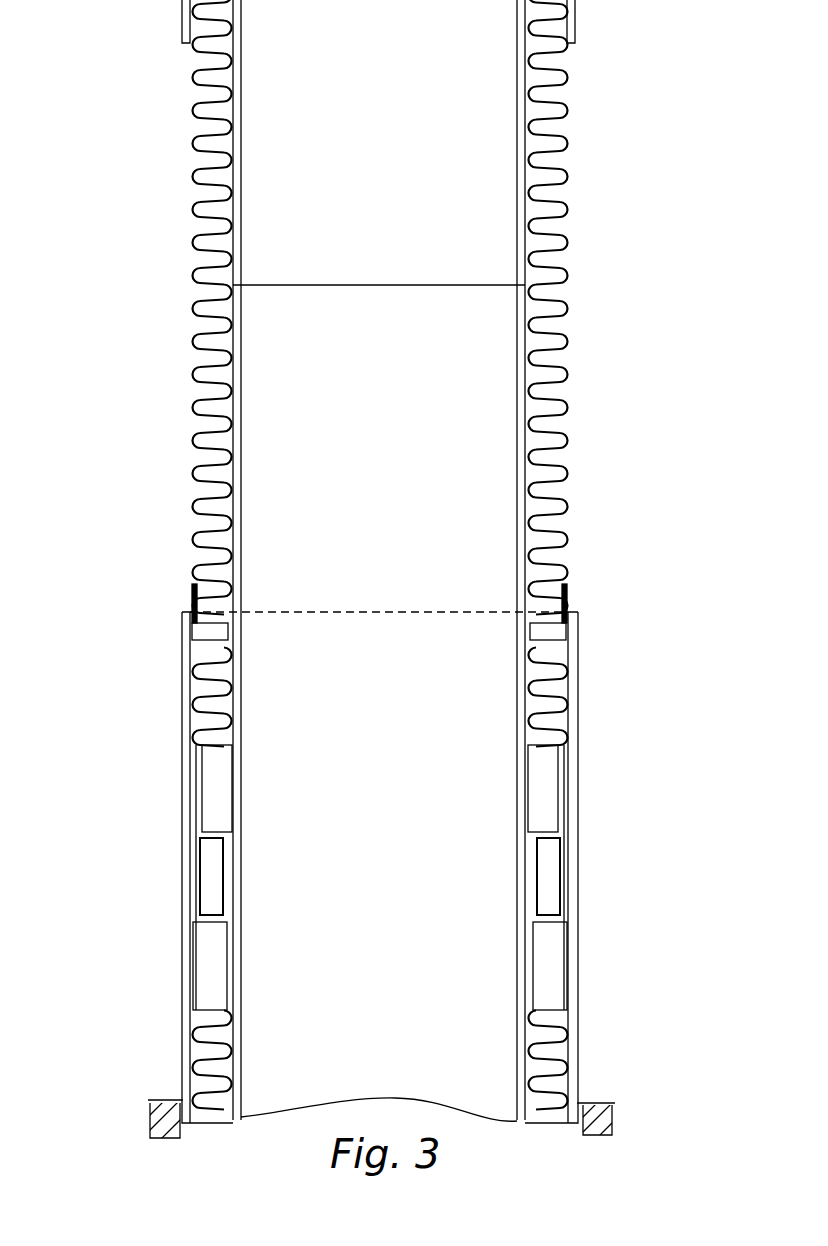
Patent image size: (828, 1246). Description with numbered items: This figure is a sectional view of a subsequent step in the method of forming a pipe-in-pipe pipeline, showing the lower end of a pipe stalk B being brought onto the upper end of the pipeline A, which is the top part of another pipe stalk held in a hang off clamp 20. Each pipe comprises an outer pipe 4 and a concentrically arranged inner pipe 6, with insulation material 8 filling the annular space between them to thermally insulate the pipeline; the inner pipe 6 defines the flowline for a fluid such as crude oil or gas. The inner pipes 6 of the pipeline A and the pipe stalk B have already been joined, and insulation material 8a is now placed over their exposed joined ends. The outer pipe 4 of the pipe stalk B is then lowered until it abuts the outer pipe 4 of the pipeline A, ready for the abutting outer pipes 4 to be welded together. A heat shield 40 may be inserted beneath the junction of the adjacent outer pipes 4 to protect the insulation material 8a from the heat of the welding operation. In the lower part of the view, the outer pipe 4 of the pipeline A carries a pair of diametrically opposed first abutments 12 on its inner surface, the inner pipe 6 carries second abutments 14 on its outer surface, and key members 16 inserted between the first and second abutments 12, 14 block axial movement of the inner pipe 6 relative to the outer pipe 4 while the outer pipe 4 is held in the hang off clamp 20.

The outer pipe 4 is at (183, 10).
The inner pipe 6 is at (233, 155).
The insulation material 8 is at (205, 1040).
The insulation material 8a is at (552, 312).
The first abutment 12 is at (552, 967).
The second abutment 14 is at (543, 783).
The key member 16 is at (547, 872).
The hang off clamp 20 is at (612, 1120).
The heat shield 40 is at (192, 606).
The pipeline A is at (160, 918).
The pipe stalk B is at (165, 85).